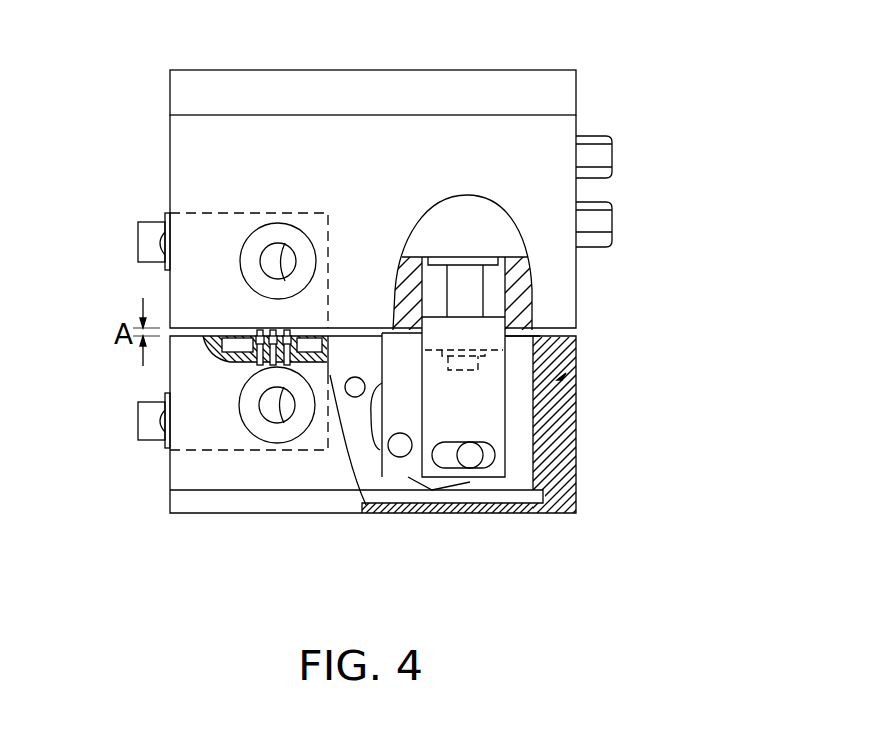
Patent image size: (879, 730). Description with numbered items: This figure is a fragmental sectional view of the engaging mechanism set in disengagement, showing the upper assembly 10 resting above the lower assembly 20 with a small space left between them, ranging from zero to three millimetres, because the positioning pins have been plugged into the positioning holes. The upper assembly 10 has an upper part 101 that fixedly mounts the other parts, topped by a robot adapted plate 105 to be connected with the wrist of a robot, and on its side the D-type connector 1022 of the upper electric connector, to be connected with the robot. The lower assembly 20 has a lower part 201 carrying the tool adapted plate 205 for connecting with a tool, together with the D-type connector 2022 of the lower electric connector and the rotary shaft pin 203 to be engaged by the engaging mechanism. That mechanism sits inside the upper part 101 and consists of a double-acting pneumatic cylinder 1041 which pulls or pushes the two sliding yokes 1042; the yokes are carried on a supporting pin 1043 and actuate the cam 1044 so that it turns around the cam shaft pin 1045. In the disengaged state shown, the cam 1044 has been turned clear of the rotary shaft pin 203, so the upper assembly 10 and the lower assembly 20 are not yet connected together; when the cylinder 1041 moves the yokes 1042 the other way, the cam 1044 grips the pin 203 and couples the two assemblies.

The robot adapted plate 105 is at (405, 95).
The upper part 101 is at (538, 145).
The upper assembly 10 is at (577, 193).
The double-acting pneumatic cylinder 1041 is at (500, 246).
The sliding yokes 1042 is at (477, 422).
The supporting pin 1043 is at (468, 453).
The cam 1044 is at (379, 449).
The cam shaft pin 1045 is at (402, 456).
The rotary shaft pin 203 is at (353, 397).
The lower part 201 is at (560, 377).
The lower assembly 20 is at (577, 480).
The tool adapted plate 205 is at (235, 503).
The D-type connector 1022 is at (152, 246).
The D-type connector 2022 is at (140, 418).